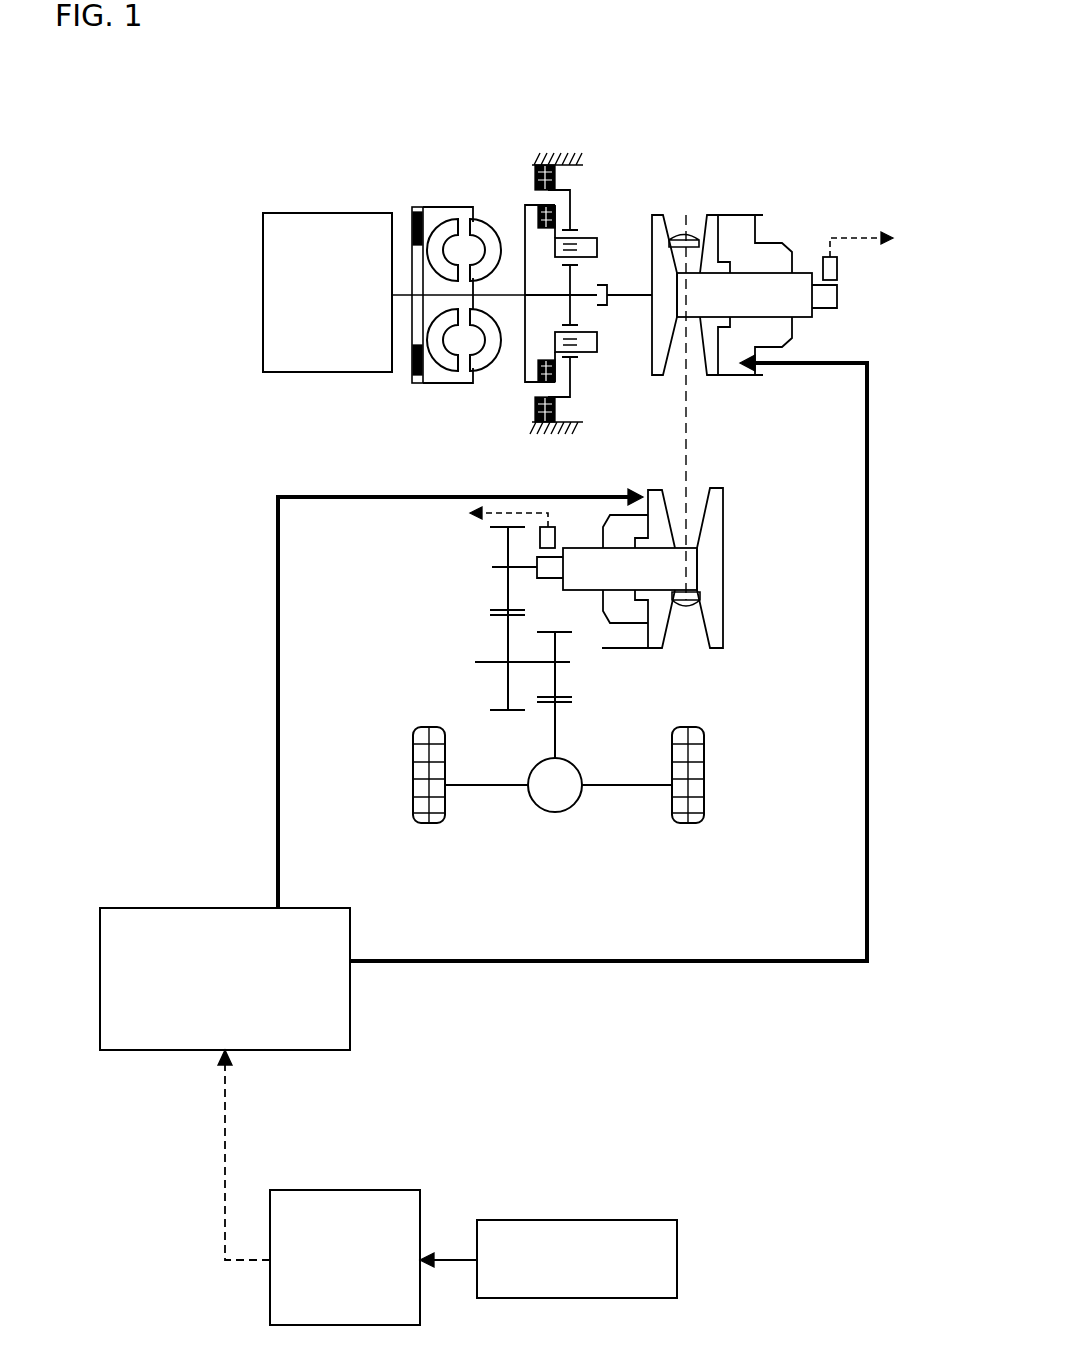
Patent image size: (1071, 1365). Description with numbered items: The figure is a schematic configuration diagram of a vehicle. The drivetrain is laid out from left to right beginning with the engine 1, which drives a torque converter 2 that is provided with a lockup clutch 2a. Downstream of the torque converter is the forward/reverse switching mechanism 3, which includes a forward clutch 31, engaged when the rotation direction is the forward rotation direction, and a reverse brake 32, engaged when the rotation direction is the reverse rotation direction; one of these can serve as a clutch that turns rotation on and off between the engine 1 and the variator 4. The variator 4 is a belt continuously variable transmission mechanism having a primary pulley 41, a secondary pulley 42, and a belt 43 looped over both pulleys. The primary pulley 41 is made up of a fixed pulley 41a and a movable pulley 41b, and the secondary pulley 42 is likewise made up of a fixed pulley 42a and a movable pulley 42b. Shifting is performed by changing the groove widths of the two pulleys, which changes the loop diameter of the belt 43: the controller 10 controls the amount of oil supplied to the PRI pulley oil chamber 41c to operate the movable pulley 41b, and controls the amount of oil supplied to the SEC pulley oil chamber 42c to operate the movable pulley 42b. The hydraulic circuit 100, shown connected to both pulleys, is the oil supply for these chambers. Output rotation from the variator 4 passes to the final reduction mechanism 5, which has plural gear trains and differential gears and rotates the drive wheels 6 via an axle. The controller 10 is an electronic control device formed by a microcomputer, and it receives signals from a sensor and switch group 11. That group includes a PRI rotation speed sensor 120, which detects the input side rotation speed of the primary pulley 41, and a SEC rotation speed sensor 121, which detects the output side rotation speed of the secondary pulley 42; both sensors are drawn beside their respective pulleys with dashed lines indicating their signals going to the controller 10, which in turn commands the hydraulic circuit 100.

The engine 1 is at (352, 212).
The torque converter 2 is at (461, 178).
The lockup clutch 2a is at (416, 213).
The forward/reverse switching mechanism 3 is at (546, 142).
The forward clutch 31 is at (530, 207).
The reverse brake 32 is at (565, 158).
The variator 4 is at (684, 142).
The primary pulley 41 is at (787, 245).
The fixed pulley 41a is at (660, 215).
The movable pulley 41b is at (715, 215).
The PRI pulley oil chamber 41c is at (737, 235).
The secondary pulley 42 is at (725, 617).
The fixed pulley 42a is at (725, 505).
The movable pulley 42b is at (658, 650).
The SEC pulley oil chamber 42c is at (632, 620).
The belt 43 is at (690, 612).
The final reduction mechanism 5 is at (450, 622).
The drive wheels 6 is at (413, 790).
The controller 10 is at (362, 1190).
The sensor and switch group 11 is at (678, 1226).
The hydraulic circuit 100 is at (223, 907).
The PRI rotation speed sensor 120 is at (837, 270).
The SEC rotation speed sensor 121 is at (555, 530).